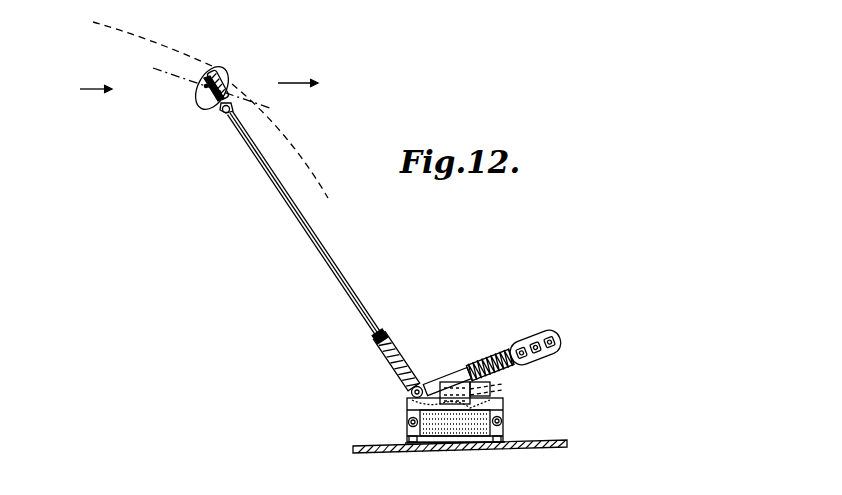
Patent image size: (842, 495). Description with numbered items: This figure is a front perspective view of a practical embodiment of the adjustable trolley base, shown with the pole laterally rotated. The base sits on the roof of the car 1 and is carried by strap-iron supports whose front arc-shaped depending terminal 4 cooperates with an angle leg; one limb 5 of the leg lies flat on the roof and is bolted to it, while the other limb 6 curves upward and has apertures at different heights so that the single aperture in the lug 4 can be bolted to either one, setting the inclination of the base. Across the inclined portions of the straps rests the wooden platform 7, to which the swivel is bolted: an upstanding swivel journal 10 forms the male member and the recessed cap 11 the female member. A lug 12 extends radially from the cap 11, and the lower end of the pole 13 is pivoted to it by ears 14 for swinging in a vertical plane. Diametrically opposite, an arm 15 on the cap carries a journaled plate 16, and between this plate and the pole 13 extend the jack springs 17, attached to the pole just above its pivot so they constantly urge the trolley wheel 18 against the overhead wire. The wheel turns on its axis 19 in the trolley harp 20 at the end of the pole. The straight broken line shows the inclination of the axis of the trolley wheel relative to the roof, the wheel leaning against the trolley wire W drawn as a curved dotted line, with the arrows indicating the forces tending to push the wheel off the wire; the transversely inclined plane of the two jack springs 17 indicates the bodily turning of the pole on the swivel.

The roof of the car 1 is at (388, 452).
The front arc-shaped depending terminal 4 is at (408, 421).
The flat limb of the angle leg 5 is at (500, 441).
The upwardly extending limb of the angle leg 6 is at (502, 431).
The wooden platform 7 is at (500, 412).
The swivel journal 10 is at (480, 392).
The recessed cap 11 is at (484, 401).
The lug 12 is at (441, 388).
The pole 13 is at (340, 264).
The ears 14 is at (411, 393).
The arm 15 is at (461, 366).
The plate 16 is at (539, 346).
The jack springs 17 is at (489, 356).
The trolley wheel 18 is at (222, 71).
The axis of the trolley wheel 19 is at (196, 87).
The trolley harp 20 is at (222, 104).
The trolley wire W is at (210, 116).